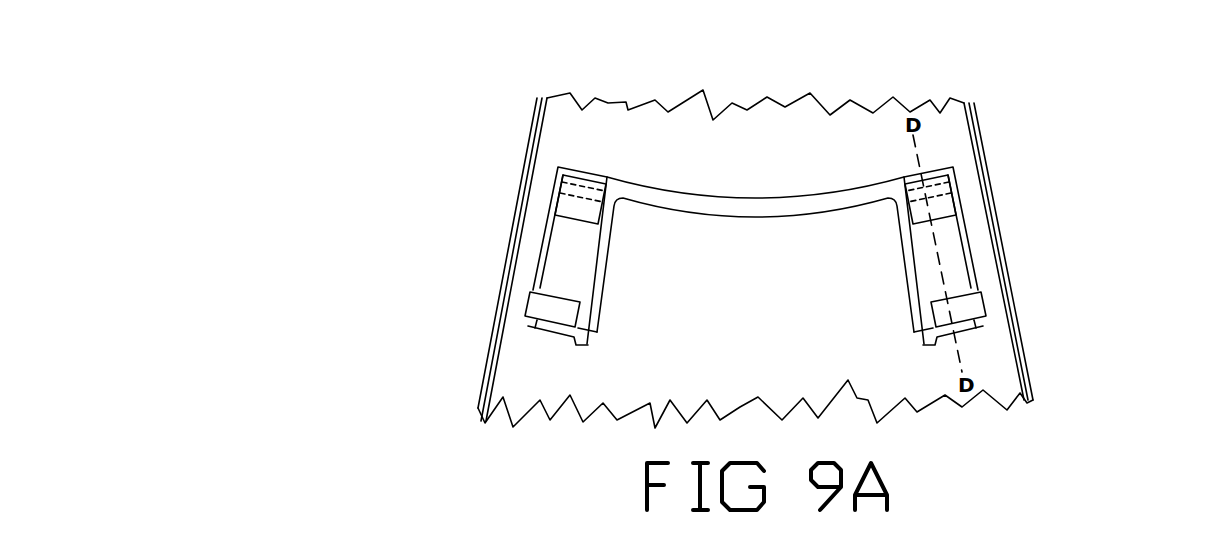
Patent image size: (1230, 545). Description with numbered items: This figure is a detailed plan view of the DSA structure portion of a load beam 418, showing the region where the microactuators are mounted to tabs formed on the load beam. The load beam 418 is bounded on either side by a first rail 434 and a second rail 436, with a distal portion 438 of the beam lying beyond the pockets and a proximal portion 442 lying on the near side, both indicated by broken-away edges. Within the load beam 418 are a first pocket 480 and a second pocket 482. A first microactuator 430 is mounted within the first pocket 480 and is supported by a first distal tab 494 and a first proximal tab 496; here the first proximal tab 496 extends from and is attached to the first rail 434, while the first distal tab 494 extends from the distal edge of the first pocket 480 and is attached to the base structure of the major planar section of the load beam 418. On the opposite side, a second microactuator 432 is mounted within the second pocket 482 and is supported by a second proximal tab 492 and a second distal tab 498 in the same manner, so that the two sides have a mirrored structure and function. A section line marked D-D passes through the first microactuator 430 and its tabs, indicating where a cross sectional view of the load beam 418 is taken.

The load beam 418 is at (970, 72).
The first microactuator 430 is at (948, 258).
The second microactuator 432 is at (567, 248).
The first rail 434 is at (978, 150).
The second rail 436 is at (530, 168).
The distal portion of the load beam 438 is at (805, 118).
The proximal portion of the load beam 442 is at (620, 407).
The first pocket 480 is at (988, 288).
The second pocket 482 is at (535, 288).
The second proximal tab 492 is at (547, 310).
The first distal tab 494 is at (935, 205).
The first proximal tab 496 is at (965, 308).
The second distal tab 498 is at (580, 202).